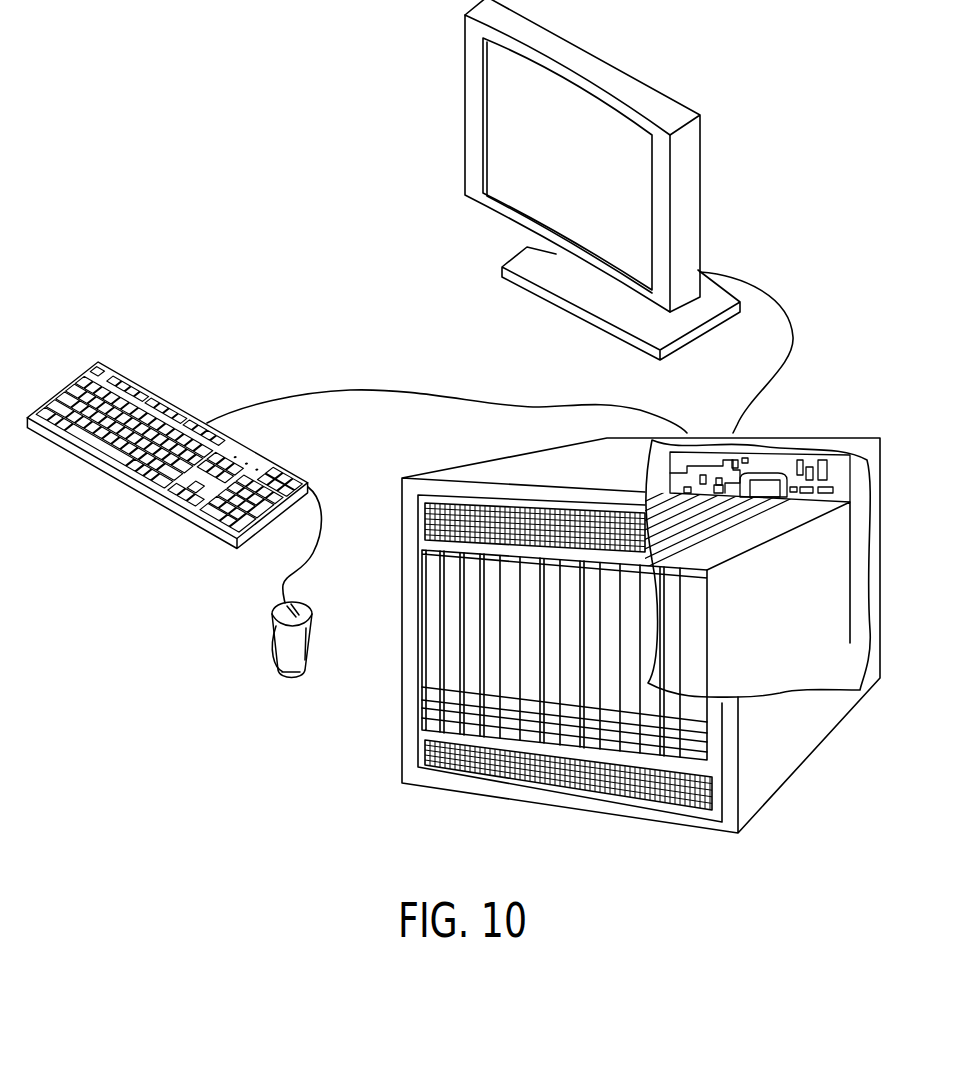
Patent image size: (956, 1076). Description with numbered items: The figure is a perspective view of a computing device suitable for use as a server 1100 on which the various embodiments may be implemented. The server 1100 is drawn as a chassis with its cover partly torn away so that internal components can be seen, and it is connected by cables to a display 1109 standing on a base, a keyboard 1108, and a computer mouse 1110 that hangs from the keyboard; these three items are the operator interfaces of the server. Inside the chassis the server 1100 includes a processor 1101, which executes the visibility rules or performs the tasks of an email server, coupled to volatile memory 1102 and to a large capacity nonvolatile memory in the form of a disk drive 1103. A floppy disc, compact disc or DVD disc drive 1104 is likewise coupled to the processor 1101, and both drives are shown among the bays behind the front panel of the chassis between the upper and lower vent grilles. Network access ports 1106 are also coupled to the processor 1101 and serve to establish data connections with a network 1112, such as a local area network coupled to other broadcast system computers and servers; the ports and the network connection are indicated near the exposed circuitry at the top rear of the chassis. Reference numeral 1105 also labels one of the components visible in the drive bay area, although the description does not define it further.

The server 1100 is at (616, 600).
The processor 1101 is at (673, 488).
The volatile memory 1102 is at (833, 493).
The disk drive 1103 is at (467, 598).
The compact disc (CD) or DVD disc drive 1104 is at (432, 662).
The memory module 1105 is at (448, 632).
The network access ports 1106 is at (767, 490).
The keyboard 1108 is at (163, 400).
The display 1109 is at (701, 209).
The computer mouse 1110 is at (283, 680).
The network 1112 is at (808, 457).